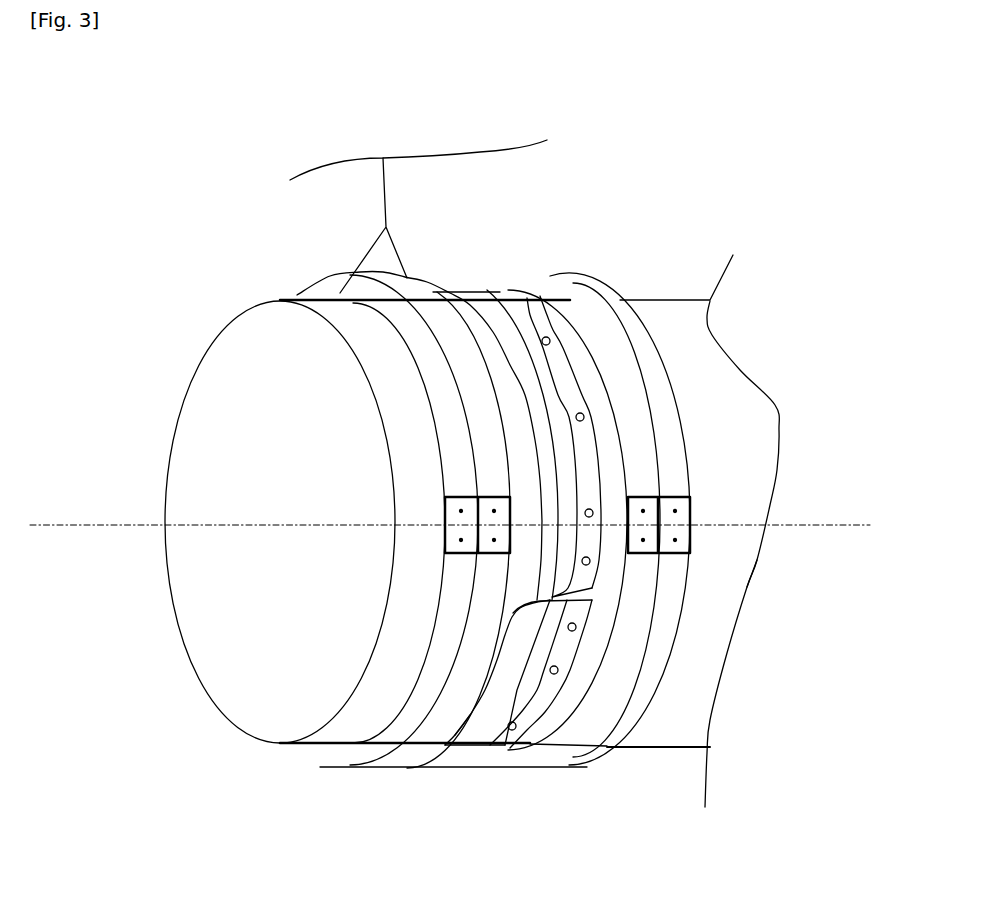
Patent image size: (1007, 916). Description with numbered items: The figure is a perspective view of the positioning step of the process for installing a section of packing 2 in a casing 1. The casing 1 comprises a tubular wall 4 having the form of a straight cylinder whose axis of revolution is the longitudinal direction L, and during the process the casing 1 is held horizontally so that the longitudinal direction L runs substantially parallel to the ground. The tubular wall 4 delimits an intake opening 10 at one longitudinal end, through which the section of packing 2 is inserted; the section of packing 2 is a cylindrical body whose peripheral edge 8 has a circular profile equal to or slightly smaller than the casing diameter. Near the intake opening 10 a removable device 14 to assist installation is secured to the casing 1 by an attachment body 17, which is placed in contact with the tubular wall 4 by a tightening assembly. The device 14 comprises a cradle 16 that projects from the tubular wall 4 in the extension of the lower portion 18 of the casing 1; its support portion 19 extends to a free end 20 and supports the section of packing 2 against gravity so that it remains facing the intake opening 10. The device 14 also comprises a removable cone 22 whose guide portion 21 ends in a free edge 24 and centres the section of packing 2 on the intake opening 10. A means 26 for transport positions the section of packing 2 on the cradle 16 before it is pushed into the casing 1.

The casing 1 is at (737, 395).
The section of packing 2 is at (192, 388).
The tubular wall 4 is at (702, 648).
The peripheral edge 8 is at (675, 322).
The intake opening 10 is at (537, 720).
The device to assist installation 14 is at (462, 724).
The cradle 16 is at (482, 720).
The attachment body 17 is at (558, 375).
The lower portion 18 is at (668, 735).
The support portion 19 is at (515, 700).
The free end 20 is at (493, 667).
The guide portion 21 is at (497, 300).
The removable cone 22 is at (527, 345).
The free edge 24 is at (458, 297).
The means for transport 26 is at (385, 197).
The longitudinal direction L is at (772, 527).